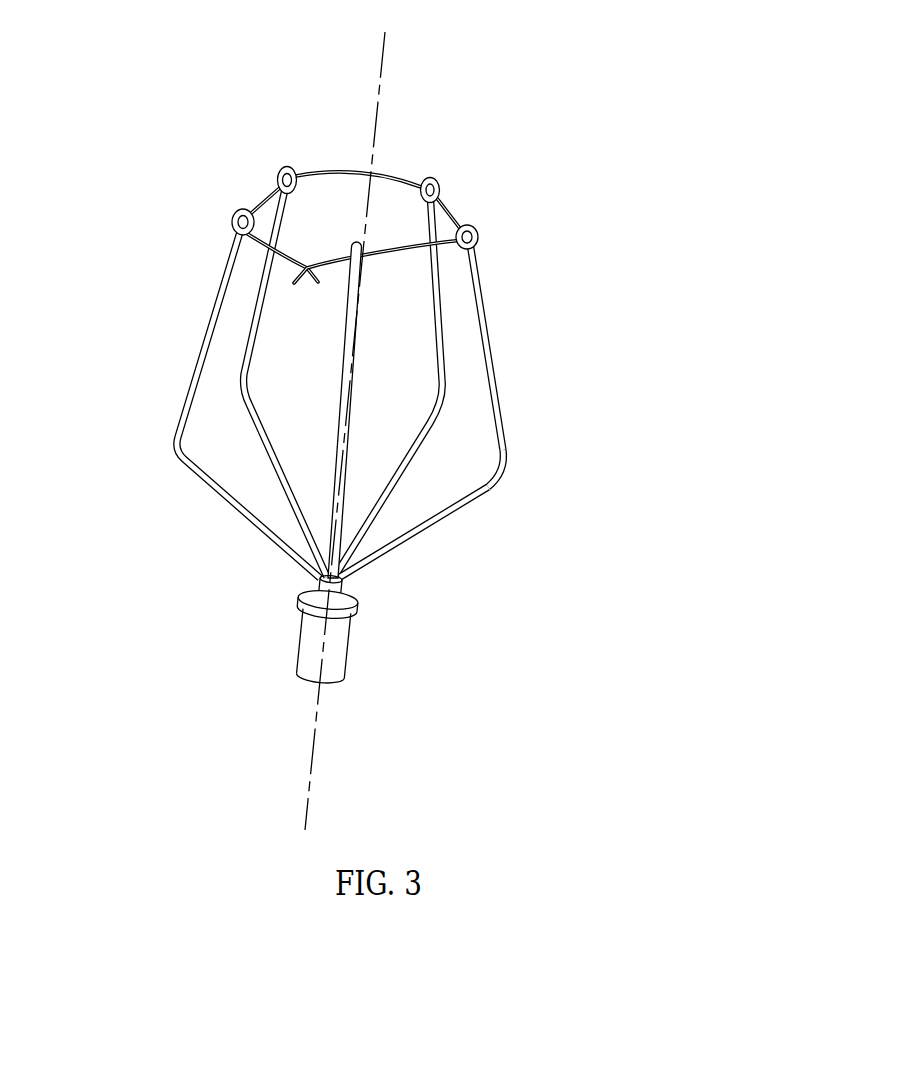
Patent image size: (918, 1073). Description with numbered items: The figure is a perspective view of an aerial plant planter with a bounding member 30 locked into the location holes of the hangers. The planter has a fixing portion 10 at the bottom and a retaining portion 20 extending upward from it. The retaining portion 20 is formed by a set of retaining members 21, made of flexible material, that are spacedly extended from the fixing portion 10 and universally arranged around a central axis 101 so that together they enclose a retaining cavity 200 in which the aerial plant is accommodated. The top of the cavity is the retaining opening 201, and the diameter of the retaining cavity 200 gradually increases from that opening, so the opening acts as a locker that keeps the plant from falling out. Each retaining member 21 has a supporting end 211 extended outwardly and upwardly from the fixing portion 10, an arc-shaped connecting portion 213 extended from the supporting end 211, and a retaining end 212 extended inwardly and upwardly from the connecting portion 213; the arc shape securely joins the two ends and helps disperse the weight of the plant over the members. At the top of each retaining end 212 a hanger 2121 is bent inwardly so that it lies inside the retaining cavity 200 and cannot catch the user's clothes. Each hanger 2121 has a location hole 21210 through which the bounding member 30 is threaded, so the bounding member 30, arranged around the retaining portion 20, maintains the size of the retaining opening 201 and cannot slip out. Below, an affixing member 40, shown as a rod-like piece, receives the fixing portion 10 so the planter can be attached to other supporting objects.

The fixing portion 10 is at (318, 587).
The retaining portion 20 is at (602, 128).
The retaining member 21 is at (463, 399).
The bounding member 30 is at (388, 174).
The affixing member 40 is at (317, 648).
The axis 101 is at (354, 415).
The retaining cavity 200 is at (318, 390).
The retaining opening 201 is at (317, 215).
The supporting end 211 is at (410, 533).
The retaining end 212 is at (492, 342).
The connecting portion 213 is at (497, 477).
The hanger 2121 is at (537, 163).
The location hole 21210 is at (435, 193).